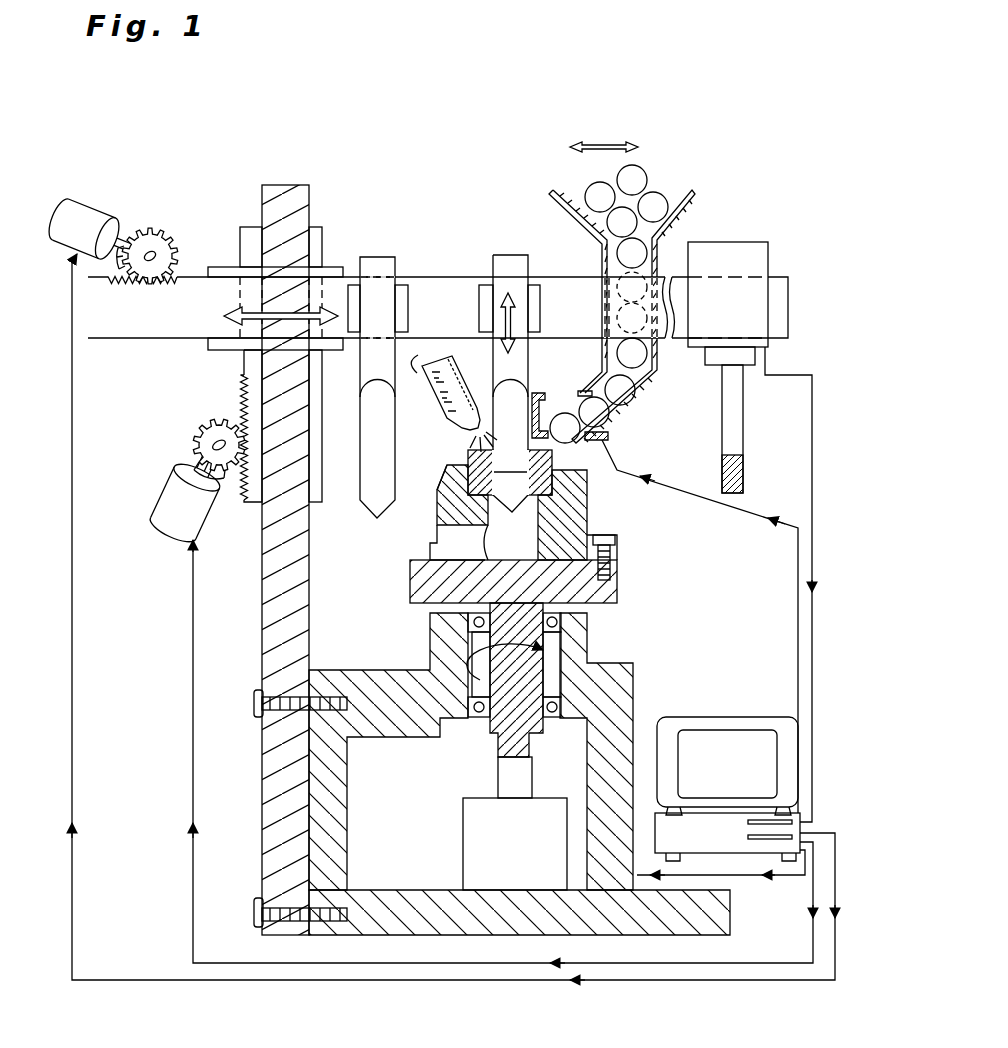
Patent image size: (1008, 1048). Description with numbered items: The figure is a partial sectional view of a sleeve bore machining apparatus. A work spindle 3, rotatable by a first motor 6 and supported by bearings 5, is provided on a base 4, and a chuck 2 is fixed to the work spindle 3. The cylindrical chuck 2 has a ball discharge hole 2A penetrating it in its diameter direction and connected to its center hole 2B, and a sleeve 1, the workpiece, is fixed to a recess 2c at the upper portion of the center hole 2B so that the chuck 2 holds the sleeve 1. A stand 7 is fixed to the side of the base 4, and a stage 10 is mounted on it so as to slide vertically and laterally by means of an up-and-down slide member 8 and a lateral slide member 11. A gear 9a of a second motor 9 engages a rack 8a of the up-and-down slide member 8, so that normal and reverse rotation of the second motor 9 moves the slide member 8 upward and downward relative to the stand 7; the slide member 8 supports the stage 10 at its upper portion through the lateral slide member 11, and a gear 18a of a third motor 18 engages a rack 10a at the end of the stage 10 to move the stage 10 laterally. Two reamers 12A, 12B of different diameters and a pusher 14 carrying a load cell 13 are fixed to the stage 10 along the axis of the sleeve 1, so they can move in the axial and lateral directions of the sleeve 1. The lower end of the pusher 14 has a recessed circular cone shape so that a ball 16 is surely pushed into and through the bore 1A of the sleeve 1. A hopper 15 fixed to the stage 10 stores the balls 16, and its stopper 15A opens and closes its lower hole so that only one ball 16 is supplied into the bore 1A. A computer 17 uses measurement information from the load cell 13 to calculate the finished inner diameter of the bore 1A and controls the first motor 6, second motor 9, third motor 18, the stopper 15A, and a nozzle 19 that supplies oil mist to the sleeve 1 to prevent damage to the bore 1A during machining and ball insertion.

The sleeve 1 is at (552, 465).
The bore 1A is at (570, 497).
The chuck 2 is at (583, 483).
The ball discharge hole 2A is at (450, 550).
The center hole 2B is at (612, 562).
The recess 2c is at (455, 472).
The work spindle 3 is at (590, 595).
The base 4 is at (620, 712).
The bearings 5 is at (563, 712).
The first motor 6 is at (494, 845).
The stand 7 is at (292, 808).
The up-and-down slide member 8 is at (238, 363).
The rack 8a is at (238, 398).
The second motor 9 is at (180, 527).
The gear 9a is at (197, 452).
The stage 10 is at (558, 272).
The rack 10a is at (128, 283).
The lateral slide member 11 is at (226, 270).
The reamer 12A is at (505, 262).
The reamer 12B is at (385, 258).
The load cell 13 is at (735, 250).
The pusher 14 is at (735, 418).
The hopper 15 is at (677, 200).
The stopper 15A is at (608, 436).
The ball 16 is at (622, 390).
The computer 17 is at (735, 745).
The third motor 18 is at (80, 213).
The gear 18a is at (145, 233).
The nozzle 19 is at (440, 362).